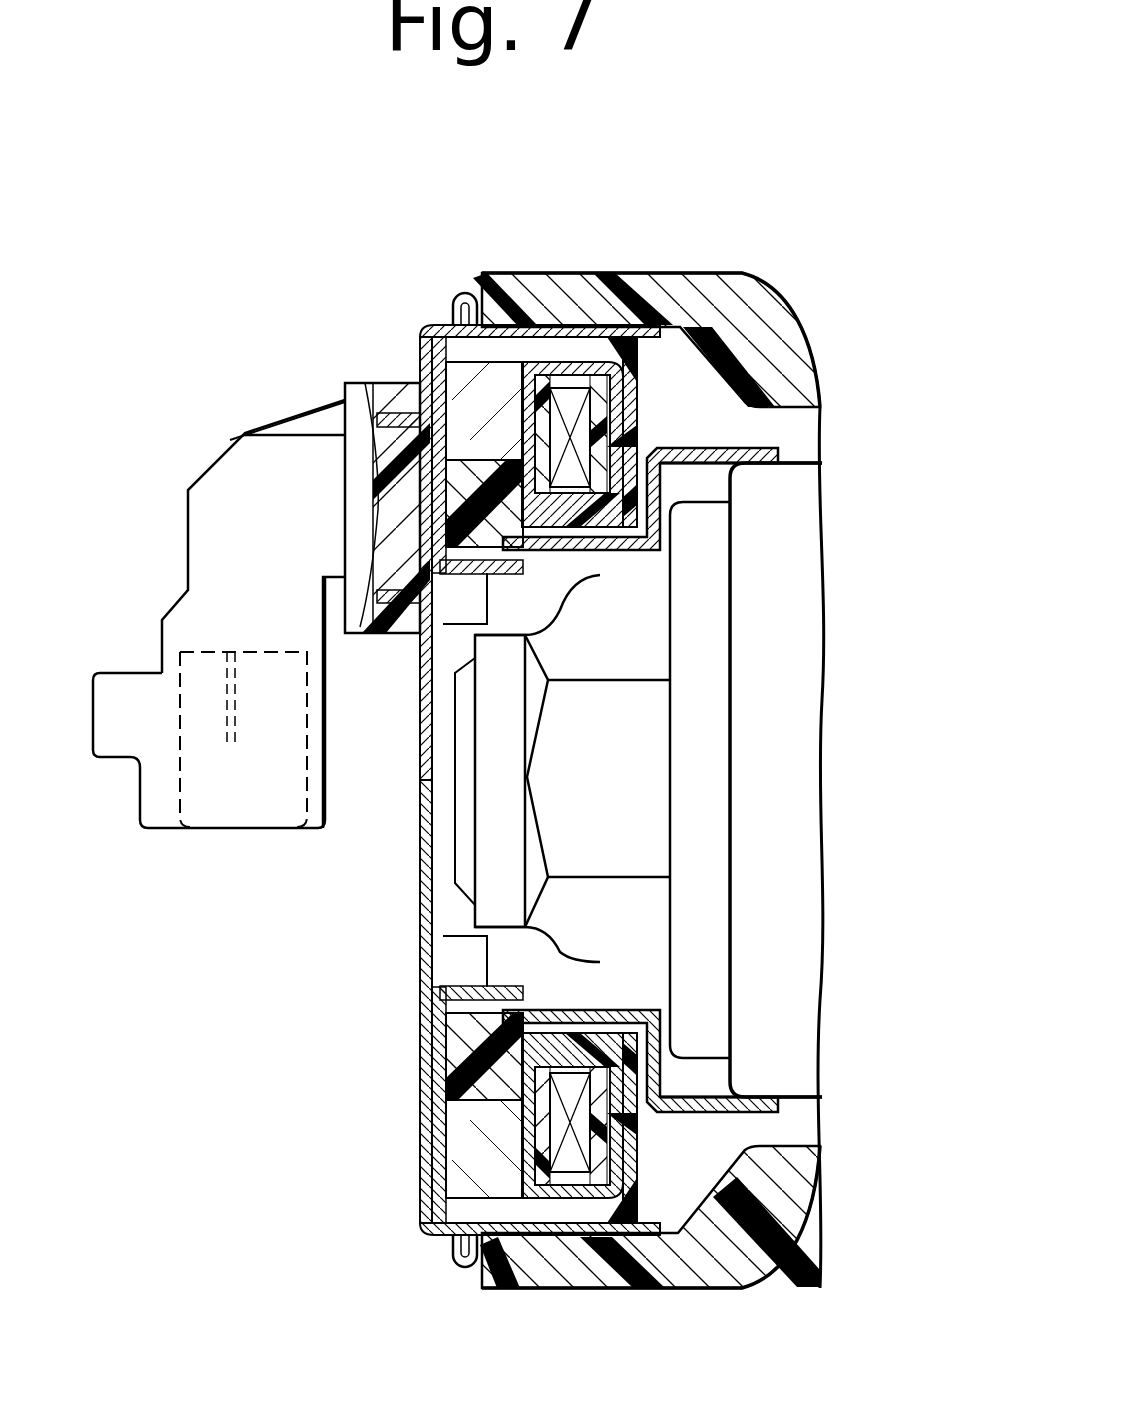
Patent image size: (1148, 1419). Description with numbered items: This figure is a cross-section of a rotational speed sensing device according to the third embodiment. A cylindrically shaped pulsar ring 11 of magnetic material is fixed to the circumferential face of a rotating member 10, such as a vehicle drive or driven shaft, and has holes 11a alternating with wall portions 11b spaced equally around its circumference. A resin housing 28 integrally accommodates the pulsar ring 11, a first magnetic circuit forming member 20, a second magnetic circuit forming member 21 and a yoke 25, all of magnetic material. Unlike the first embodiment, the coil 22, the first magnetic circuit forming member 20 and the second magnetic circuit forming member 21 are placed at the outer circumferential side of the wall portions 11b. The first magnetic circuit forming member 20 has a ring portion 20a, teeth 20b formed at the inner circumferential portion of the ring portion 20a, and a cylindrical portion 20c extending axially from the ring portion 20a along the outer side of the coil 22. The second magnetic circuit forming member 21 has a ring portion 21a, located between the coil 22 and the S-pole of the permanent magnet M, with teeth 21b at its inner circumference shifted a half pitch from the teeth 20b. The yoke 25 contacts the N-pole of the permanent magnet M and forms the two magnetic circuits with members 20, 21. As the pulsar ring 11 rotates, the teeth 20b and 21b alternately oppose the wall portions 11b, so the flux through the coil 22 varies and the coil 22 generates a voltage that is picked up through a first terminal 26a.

The rotating member 10 is at (805, 675).
The pulsar ring 11 is at (752, 445).
The holes 11a is at (600, 962).
The wall portions 11b is at (600, 575).
The first magnetic circuit forming member 20 is at (640, 445).
The ring portion 20a is at (622, 404).
The teeth 20b is at (683, 506).
The cylindrical portion 20c is at (560, 368).
The second magnetic circuit forming member 21 is at (512, 387).
The ring portion 21a is at (460, 383).
The teeth 21b is at (437, 485).
The coil 22 is at (575, 405).
The yoke 25 is at (380, 510).
The first terminal 26a is at (230, 745).
The housing 28 is at (397, 547).
The permanent magnet M is at (432, 392).